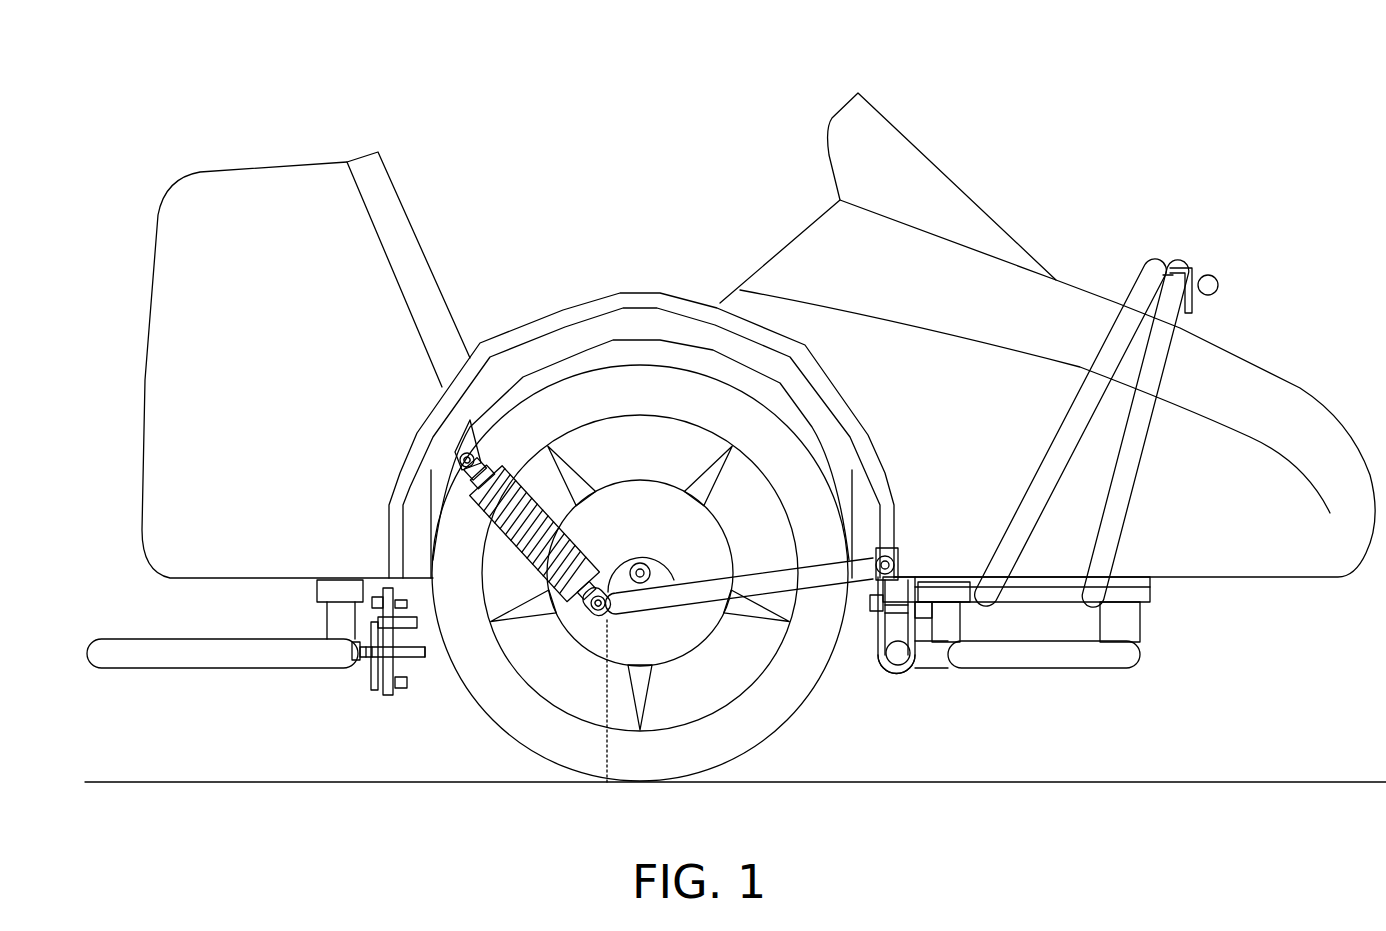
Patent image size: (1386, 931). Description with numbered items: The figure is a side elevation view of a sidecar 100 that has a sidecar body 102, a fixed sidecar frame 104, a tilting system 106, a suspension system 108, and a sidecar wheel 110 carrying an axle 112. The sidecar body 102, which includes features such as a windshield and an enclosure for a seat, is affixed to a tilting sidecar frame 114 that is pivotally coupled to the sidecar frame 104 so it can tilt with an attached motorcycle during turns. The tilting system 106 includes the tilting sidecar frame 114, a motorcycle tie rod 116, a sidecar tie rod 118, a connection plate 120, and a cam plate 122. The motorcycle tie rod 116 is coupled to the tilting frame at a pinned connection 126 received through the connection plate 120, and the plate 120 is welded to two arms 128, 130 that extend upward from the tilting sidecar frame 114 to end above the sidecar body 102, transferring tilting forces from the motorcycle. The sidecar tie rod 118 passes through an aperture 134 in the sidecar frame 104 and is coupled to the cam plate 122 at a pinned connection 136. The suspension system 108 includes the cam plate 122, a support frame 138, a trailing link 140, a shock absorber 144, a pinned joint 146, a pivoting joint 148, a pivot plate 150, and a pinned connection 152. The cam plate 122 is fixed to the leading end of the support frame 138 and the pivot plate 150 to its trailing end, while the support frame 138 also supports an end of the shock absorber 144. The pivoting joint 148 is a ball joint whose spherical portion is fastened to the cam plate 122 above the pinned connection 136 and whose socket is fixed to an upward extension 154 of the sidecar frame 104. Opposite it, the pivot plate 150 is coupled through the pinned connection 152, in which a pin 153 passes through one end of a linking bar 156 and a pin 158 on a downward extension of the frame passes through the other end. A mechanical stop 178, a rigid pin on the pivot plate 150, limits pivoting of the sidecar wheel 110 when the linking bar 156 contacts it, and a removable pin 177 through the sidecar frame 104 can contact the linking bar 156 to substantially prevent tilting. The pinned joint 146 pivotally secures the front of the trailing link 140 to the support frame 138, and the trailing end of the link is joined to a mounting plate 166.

The sidecar 100 is at (412, 66).
The sidecar body 102 is at (240, 190).
The sidecar frame 104 is at (287, 653).
The tilting system 106 is at (1030, 402).
The suspension system 108 is at (824, 487).
The sidecar wheel 110 is at (610, 392).
The axle 112 is at (650, 566).
The tilting sidecar frame 114 is at (1135, 605).
The motorcycle tie rod 116 is at (1215, 283).
The sidecar tie rod 118 is at (935, 650).
The connection plate 120 is at (1193, 300).
The cam plate 122 is at (893, 676).
The pinned connection 126 is at (1185, 272).
The arm 128 is at (1047, 457).
The arm 130 is at (1130, 453).
The aperture 134 is at (937, 612).
The pinned connection 136 is at (905, 668).
The support frame 138 is at (697, 310).
The trailing link 140 is at (699, 630).
The shock absorber 144 is at (480, 557).
The pinned joint 146 is at (906, 540).
The pivoting joint 148 is at (918, 564).
The pivot plate 150 is at (362, 572).
The pinned connection 152 is at (382, 575).
The pin 153 is at (417, 628).
The upward extension 154 is at (1060, 640).
The linking bar 156 is at (372, 615).
The pin 158 is at (390, 697).
The mounting plate 166 is at (607, 782).
The removable pin 177 is at (375, 690).
The mechanical stop 178 is at (425, 660).